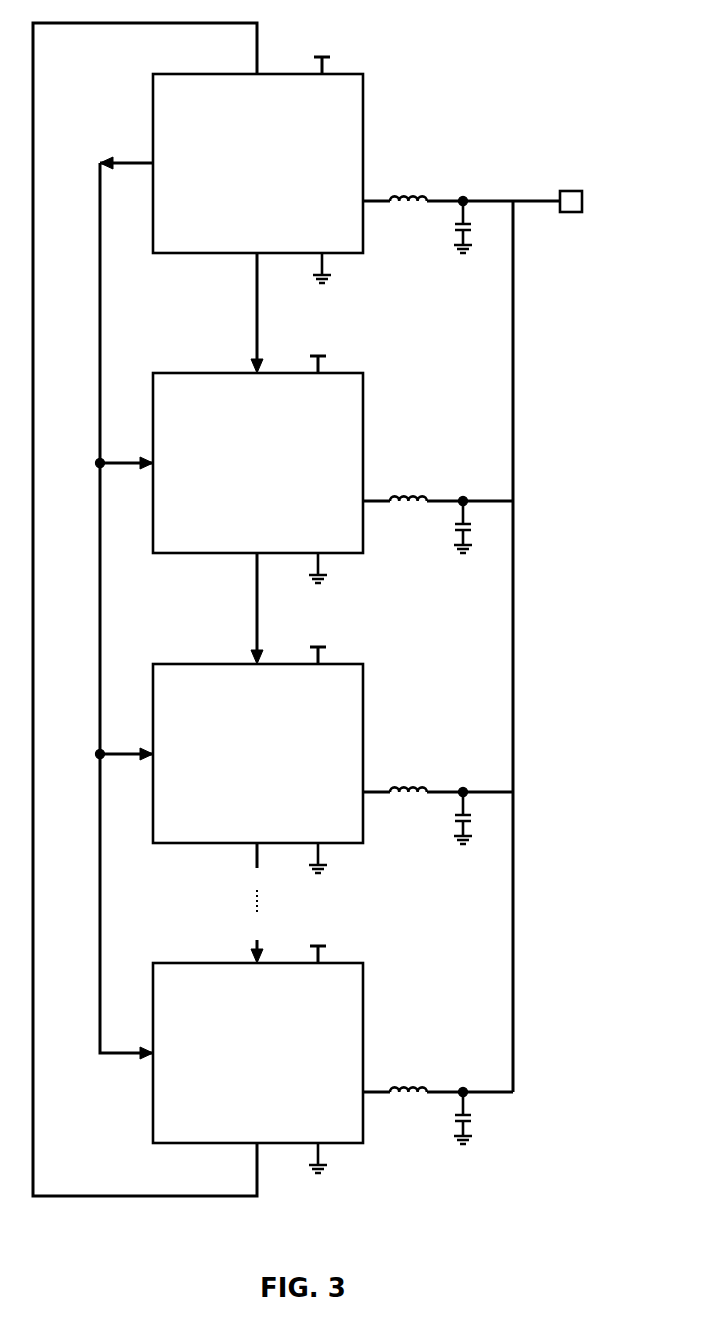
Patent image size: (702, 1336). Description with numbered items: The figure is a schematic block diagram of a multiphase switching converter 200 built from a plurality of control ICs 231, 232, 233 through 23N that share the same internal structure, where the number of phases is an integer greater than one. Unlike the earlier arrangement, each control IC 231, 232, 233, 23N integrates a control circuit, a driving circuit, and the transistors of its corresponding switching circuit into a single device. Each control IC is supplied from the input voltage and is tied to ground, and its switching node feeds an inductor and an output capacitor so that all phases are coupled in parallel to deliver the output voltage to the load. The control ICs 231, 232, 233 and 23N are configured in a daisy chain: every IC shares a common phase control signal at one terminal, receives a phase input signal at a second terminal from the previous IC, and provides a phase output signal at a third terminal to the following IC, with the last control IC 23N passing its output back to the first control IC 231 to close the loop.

The multiphase switching converter 200 is at (476, 48).
The control IC 231 is at (183, 254).
The control IC 232 is at (183, 554).
The control IC 233 is at (183, 844).
The control IC 23N is at (172, 1144).